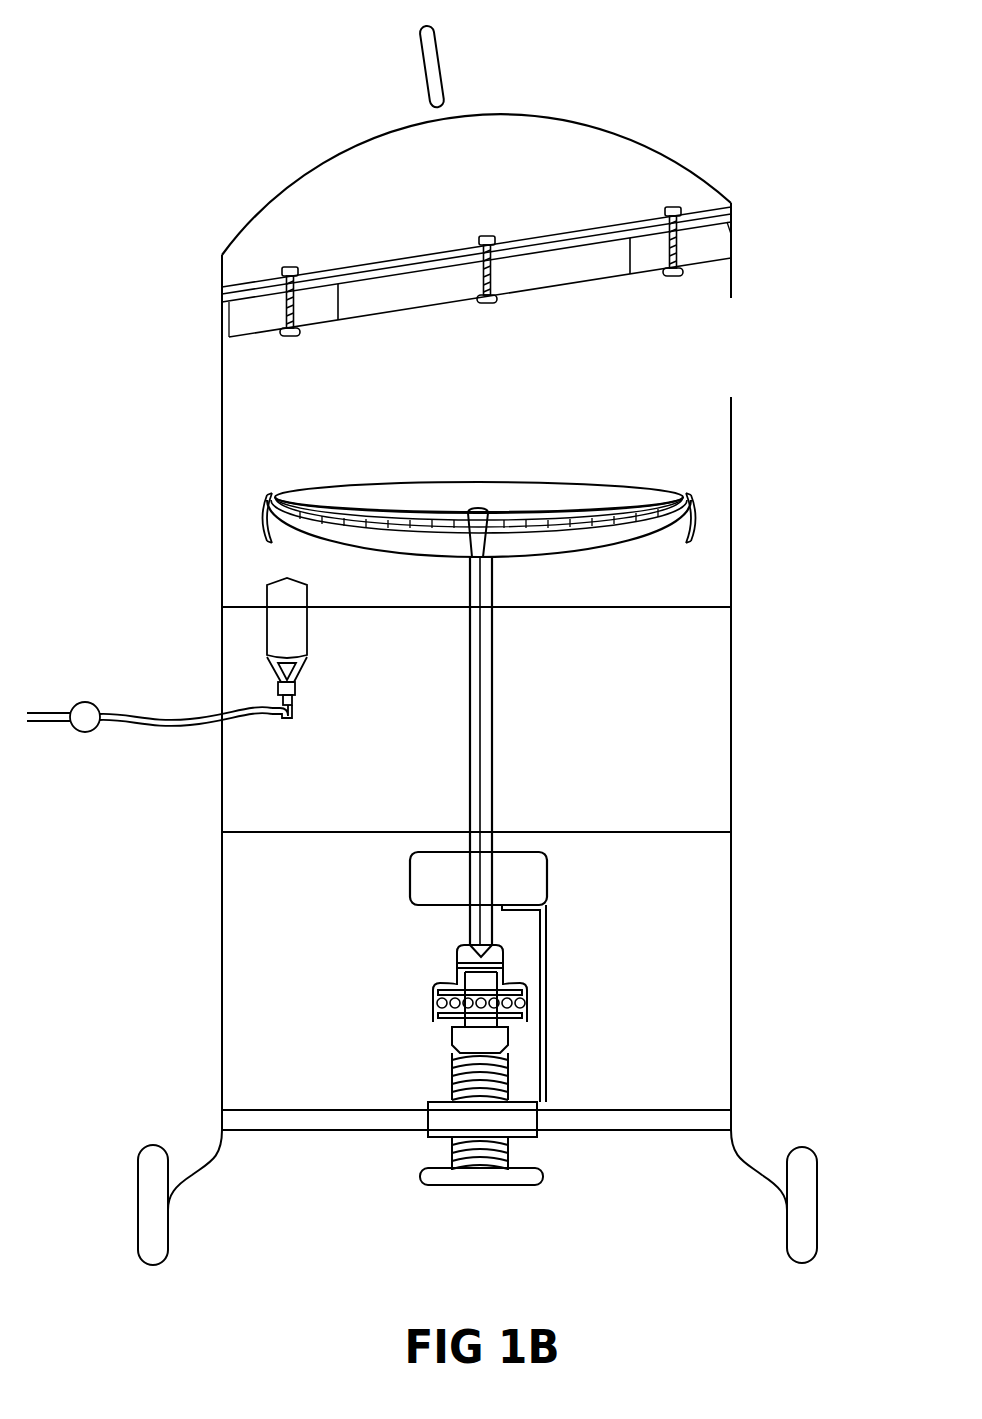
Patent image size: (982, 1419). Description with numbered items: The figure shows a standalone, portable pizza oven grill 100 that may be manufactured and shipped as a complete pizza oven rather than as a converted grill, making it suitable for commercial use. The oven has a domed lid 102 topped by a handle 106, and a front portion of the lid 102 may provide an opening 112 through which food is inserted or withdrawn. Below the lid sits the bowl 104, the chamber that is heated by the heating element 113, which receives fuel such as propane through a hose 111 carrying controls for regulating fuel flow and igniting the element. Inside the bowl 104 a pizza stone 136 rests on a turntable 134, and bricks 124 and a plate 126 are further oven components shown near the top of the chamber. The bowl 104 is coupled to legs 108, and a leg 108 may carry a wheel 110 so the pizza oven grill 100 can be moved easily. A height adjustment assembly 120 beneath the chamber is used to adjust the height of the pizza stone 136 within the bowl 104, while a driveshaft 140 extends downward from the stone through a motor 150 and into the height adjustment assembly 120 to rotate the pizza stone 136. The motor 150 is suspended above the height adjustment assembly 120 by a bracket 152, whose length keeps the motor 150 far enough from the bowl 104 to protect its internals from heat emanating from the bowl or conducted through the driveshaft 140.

The pizza oven grill 100 is at (113, 59).
The lid 102 is at (645, 130).
The bowl 104 is at (735, 570).
The handle 106 is at (428, 42).
The legs 108 is at (752, 1172).
The wheel 110 is at (152, 1170).
The hose 111 is at (85, 732).
The opening 112 is at (766, 370).
The heating element 113 is at (287, 620).
The height adjustment assembly 120 is at (410, 945).
The bricks 124 is at (238, 316).
The plate 126 is at (328, 270).
The turntable 134 is at (580, 545).
The pizza stone 136 is at (378, 497).
The driveshaft 140 is at (470, 780).
The motor 150 is at (415, 862).
The bracket 152 is at (550, 1032).